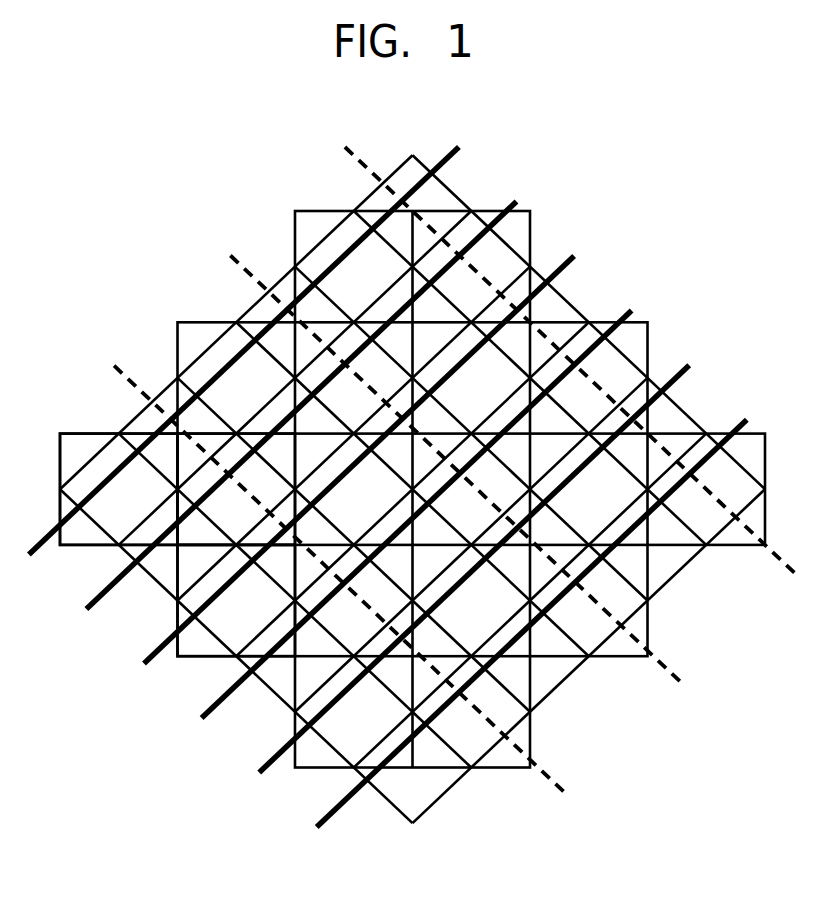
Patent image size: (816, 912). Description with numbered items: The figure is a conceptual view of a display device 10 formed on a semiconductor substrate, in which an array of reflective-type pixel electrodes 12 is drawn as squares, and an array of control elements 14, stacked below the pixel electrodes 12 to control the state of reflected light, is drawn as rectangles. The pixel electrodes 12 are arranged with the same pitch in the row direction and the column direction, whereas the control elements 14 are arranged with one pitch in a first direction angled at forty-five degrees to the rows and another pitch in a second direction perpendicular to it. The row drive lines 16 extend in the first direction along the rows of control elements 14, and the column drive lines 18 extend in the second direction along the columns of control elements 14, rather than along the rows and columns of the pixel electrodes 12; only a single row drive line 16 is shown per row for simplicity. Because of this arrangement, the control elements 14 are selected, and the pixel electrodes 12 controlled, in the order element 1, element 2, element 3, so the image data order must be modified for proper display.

The display device 10 is at (412, 490).
The pixel electrode 12 is at (648, 333).
The control element 14 is at (678, 570).
The row drive line 16 is at (553, 778).
The column drive line 18 is at (218, 720).
The element 1 is at (119, 489).
The element 2 is at (237, 489).
The element 3 is at (237, 600).